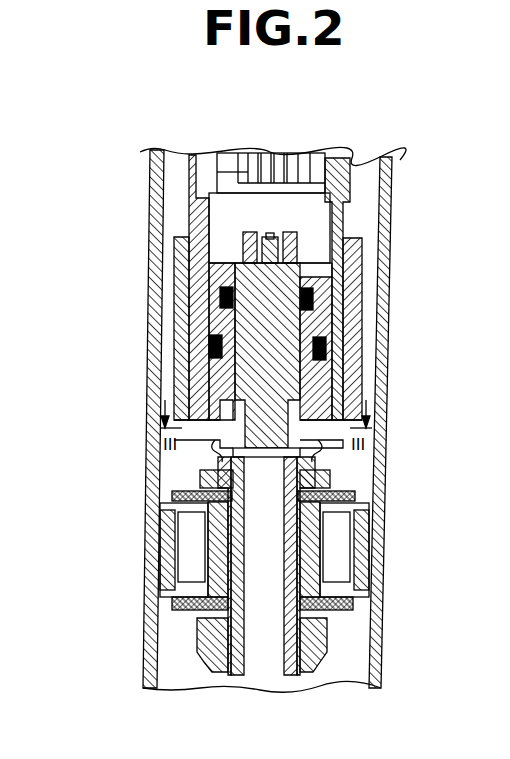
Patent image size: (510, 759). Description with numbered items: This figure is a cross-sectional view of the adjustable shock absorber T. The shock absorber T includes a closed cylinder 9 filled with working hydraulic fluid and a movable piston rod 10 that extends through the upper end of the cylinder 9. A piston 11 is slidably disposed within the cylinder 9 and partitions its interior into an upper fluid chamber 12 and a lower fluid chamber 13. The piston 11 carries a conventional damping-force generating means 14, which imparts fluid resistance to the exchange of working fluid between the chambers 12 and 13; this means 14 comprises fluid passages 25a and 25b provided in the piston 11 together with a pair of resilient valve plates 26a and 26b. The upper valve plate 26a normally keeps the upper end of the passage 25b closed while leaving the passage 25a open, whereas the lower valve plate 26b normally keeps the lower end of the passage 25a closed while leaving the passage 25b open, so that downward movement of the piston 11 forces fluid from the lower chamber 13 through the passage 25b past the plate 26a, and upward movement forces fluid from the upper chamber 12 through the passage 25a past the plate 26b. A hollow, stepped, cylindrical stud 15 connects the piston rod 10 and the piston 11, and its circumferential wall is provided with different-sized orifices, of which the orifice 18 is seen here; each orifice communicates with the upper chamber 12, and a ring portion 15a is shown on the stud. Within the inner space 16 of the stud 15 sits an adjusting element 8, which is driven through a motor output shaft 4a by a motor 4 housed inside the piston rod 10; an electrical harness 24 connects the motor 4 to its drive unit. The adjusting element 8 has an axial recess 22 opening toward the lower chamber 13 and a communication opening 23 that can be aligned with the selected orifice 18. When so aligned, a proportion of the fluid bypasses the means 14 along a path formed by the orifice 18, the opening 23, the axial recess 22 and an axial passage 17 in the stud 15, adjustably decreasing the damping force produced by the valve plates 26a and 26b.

The shock absorber T is at (382, 113).
The motor 4 is at (320, 226).
The motor output shaft 4a is at (262, 242).
The adjusting element 8 is at (288, 287).
The closed cylinder 9 is at (392, 162).
The piston rod 10 is at (338, 158).
The piston 11 is at (350, 565).
The upper fluid chamber 12 is at (172, 183).
The lower fluid chamber 13 is at (167, 653).
The damping-force generating means 14 is at (236, 556).
The stud 15 is at (313, 300).
The seal ring 15a is at (220, 384).
The inner space 16 is at (326, 355).
The axial passage 17 is at (266, 660).
The orifice 18 is at (216, 432).
The axial recess 22 is at (318, 452).
The communication opening 23 is at (222, 462).
The electrical harness 24 is at (268, 152).
The fluid passage 25a is at (193, 557).
The fluid passage 25b is at (314, 535).
The upper valve plate 26a is at (200, 498).
The lower valve plate 26b is at (187, 603).